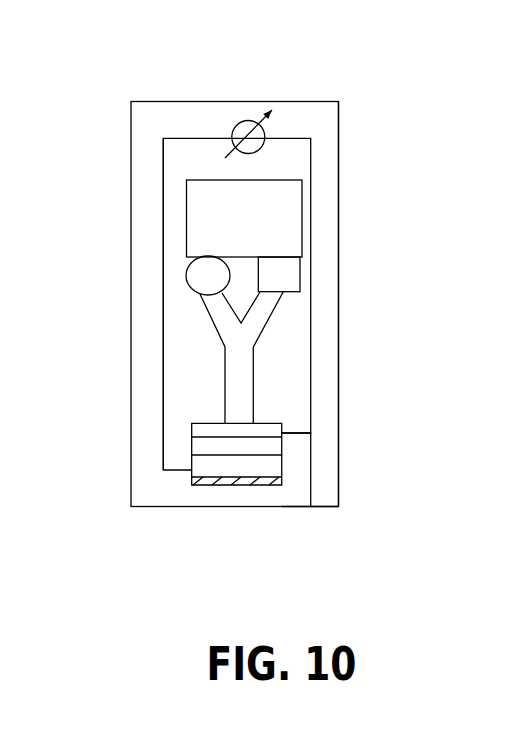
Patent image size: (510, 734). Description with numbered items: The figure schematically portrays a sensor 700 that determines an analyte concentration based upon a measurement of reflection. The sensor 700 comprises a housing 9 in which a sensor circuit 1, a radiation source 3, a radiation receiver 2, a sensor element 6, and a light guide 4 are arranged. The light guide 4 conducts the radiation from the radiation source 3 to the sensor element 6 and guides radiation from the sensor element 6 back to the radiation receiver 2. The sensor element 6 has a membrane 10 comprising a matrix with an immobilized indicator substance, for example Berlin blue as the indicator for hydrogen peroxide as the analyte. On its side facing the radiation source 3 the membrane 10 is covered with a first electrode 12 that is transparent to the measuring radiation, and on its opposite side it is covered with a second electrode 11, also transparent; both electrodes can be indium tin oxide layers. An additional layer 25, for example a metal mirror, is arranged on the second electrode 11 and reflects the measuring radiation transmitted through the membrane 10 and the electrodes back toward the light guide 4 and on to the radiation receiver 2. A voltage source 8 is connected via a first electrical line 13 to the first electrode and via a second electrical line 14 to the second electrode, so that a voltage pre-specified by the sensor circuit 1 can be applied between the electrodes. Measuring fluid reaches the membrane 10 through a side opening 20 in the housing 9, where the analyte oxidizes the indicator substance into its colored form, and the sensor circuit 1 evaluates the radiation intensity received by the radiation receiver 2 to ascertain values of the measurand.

The sensor 700 is at (297, 93).
The housing 9 is at (340, 167).
The second electrical line 14 is at (313, 327).
The first electrical line 13 is at (163, 387).
The voltage source 8 is at (252, 121).
The sensor circuit 1 is at (251, 226).
The radiation source 3 is at (208, 275).
The radiation receiver 2 is at (279, 274).
The light guide 4 is at (227, 360).
The first electrode 12 is at (270, 423).
The membrane 10 is at (282, 448).
The second electrode 11 is at (203, 468).
The additional layer 25 is at (265, 486).
The sensor element 6 is at (233, 487).
The side opening 20 is at (313, 468).